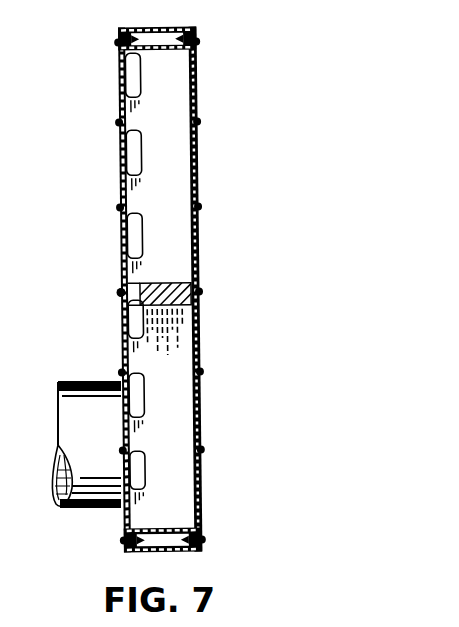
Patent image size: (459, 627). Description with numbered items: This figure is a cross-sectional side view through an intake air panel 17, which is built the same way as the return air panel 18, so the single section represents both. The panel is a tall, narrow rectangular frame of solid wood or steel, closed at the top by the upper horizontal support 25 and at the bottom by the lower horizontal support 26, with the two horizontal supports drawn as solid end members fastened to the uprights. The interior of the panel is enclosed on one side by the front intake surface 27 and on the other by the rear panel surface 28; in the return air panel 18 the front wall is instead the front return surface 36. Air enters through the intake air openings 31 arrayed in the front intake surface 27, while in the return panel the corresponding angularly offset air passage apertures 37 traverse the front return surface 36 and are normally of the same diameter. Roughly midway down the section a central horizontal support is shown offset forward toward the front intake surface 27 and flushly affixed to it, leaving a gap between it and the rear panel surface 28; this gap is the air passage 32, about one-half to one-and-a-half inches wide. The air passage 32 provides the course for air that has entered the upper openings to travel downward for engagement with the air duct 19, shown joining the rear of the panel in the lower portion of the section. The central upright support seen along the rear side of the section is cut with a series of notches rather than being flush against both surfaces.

The intake air panel 17 is at (206, 291).
The return air panel 18 is at (206, 291).
The air duct 19 is at (78, 430).
The upper horizontal support 25 is at (172, 25).
The lower horizontal support 26 is at (185, 552).
The front intake surface 27 is at (216, 317).
The rear panel surface 28 is at (122, 191).
The intake air openings 31 is at (248, 288).
The air passage 32 is at (126, 288).
The front return surface 36 is at (198, 312).
The angularly offset air passage apertures 37 is at (199, 178).